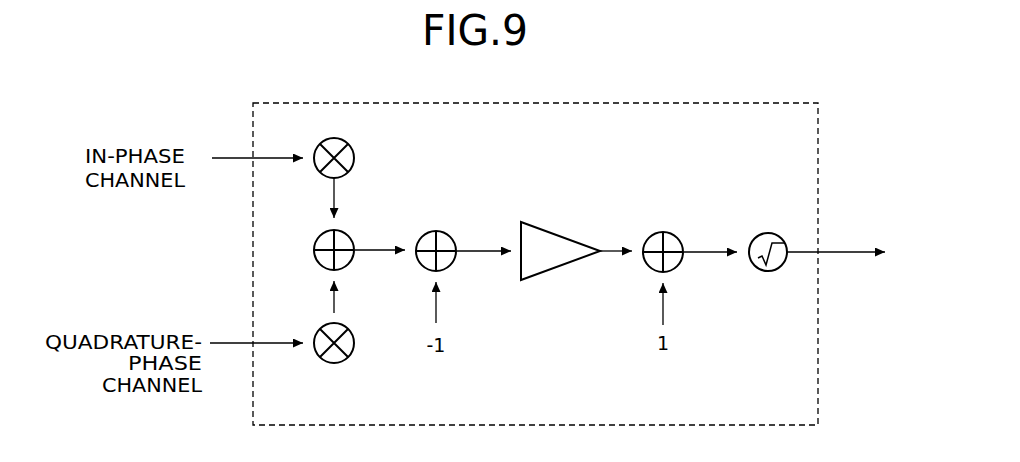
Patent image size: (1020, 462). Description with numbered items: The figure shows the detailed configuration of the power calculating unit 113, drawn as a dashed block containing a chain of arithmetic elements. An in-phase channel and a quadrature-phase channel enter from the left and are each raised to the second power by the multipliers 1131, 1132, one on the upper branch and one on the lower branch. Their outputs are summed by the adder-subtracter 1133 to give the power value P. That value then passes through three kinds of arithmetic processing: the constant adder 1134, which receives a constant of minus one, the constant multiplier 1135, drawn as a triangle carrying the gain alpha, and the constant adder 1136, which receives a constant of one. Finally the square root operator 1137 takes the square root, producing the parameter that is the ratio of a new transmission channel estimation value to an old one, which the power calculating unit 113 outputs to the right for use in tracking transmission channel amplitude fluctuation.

The power calculating unit 113 is at (818, 372).
The multiplier 1131 is at (354, 158).
The multiplier 1132 is at (334, 363).
The adder-subtracter 1133 is at (314, 252).
The constant adder 1134 is at (445, 233).
The constant multiplier 1135 is at (560, 236).
The constant adder 1136 is at (672, 234).
The square root operator 1137 is at (777, 234).